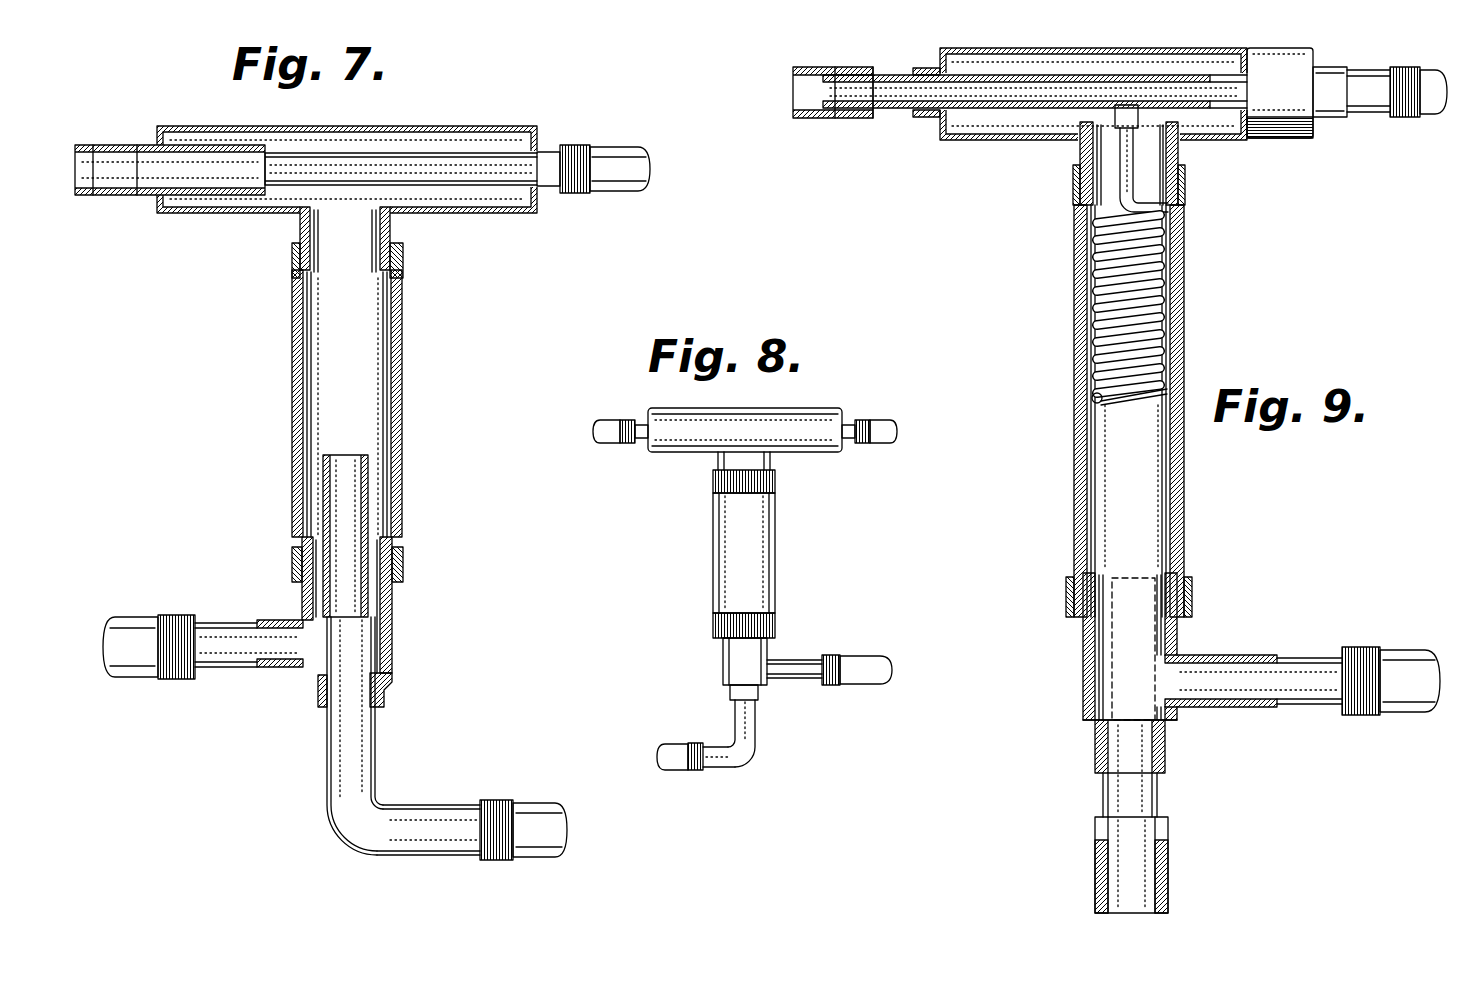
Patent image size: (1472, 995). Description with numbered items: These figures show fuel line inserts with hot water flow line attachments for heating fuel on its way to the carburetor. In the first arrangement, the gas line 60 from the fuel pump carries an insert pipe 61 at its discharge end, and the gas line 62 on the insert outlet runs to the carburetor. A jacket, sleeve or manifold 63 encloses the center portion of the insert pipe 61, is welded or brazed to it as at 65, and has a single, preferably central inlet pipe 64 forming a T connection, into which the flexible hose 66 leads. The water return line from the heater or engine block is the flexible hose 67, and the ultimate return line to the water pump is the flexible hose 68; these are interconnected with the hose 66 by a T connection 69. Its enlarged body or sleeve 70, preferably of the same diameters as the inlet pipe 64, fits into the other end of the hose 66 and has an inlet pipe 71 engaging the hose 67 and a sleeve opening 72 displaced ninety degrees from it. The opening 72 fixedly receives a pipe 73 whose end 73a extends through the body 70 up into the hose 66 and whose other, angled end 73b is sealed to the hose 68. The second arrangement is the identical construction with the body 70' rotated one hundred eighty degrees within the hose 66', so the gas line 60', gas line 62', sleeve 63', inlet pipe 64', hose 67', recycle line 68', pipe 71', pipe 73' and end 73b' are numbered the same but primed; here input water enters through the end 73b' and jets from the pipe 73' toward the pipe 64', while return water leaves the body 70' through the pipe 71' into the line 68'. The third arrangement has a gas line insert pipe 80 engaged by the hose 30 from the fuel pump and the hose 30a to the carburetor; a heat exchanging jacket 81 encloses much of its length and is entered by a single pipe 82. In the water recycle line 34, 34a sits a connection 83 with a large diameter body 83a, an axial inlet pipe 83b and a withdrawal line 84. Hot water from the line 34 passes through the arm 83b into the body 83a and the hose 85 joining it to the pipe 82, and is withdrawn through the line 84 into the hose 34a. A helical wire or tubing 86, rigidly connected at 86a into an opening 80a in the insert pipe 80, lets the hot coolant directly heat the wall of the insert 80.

In FIG. 7, the gas line 60 is at (620, 183).
In FIG. 7, the insert pipe 61 is at (432, 153).
In FIG. 7, the gas line 62 is at (170, 148).
In FIG. 7, the jacket, sleeve or manifold 63 is at (347, 156).
In FIG. 7, the inlet pipe 64 is at (369, 242).
In FIG. 7, the attachment 65 is at (542, 150).
In FIG. 7, the hose 66 is at (320, 403).
In FIG. 7, the flexible hose 67 is at (149, 632).
In FIG. 7, the flexible hose or line 68 is at (523, 816).
In FIG. 7, the T connection 69 is at (428, 647).
In FIG. 7, the body element or sleeve 70 is at (363, 605).
In FIG. 7, the inlet pipe 71 is at (249, 661).
In FIG. 7, the sleeve opening 72 is at (373, 698).
In FIG. 7, the pipe 73 is at (334, 736).
In FIG. 7, the pipe end 73a is at (348, 457).
In FIG. 7, the pipe end 73b is at (428, 846).
In FIG. 8, the gas line 60' is at (872, 413).
In FIG. 8, the gas line 62' is at (609, 414).
In FIG. 8, the sleeve 63' is at (745, 414).
In FIG. 8, the inlet pipe 64' is at (768, 472).
In FIG. 8, the hose 66' is at (771, 565).
In FIG. 8, the hose 67' is at (669, 738).
In FIG. 8, the recycle line 68' is at (860, 655).
In FIG. 8, the body 70' is at (721, 669).
In FIG. 8, the pipe 71' is at (796, 651).
In FIG. 8, the pipe 73' is at (768, 733).
In FIG. 8, the pipe end 73b' is at (742, 774).
In FIG. 9, the hose 30 is at (1434, 67).
In FIG. 9, the hose 30a is at (813, 70).
In FIG. 9, the gas line insert tubing or pipe 80 is at (1007, 74).
In FIG. 9, the opening 80a is at (1181, 140).
In FIG. 9, the heat exchanging jacket 81 is at (1230, 40).
In FIG. 9, the pipe or tubing 82 is at (1148, 181).
In FIG. 9, the connection 83 is at (1069, 721).
In FIG. 9, the body 83a is at (1083, 674).
In FIG. 9, the inlet pipe 83b is at (1161, 795).
In FIG. 9, the withdrawal line or tubing 84 is at (1242, 655).
In FIG. 9, the hose or flexible connection 85 is at (1074, 455).
In FIG. 9, the helical wire or tubing 86 is at (1172, 318).
In FIG. 9, the rigid connection 86a is at (1077, 141).
In FIG. 9, the water recycle line 34 is at (1168, 898).
In FIG. 9, the hose 34a is at (1410, 715).